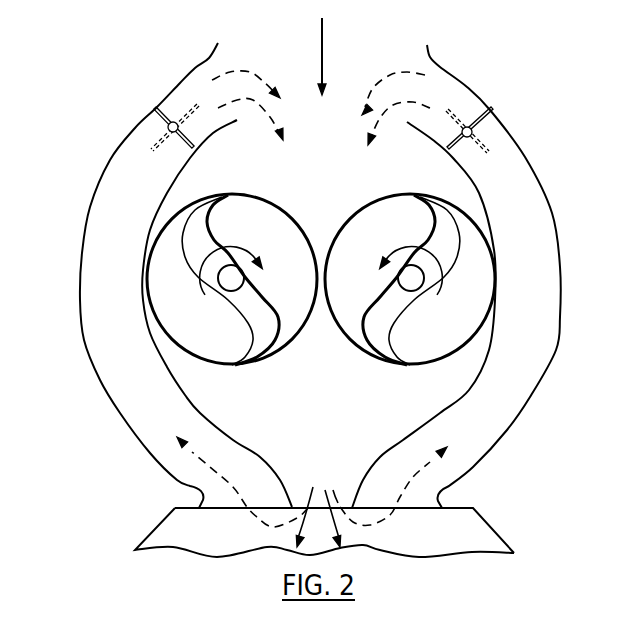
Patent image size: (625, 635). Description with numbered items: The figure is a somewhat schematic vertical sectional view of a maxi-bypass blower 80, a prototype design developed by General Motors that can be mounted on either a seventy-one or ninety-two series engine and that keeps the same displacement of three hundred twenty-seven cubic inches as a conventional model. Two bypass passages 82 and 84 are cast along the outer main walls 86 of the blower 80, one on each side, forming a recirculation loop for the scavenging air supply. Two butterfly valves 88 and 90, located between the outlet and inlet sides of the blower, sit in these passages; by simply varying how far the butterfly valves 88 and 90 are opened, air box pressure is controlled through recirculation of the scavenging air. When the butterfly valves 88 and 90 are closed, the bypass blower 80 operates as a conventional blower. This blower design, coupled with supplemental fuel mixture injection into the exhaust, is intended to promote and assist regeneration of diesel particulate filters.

The maxi-bypass blower 80 is at (73, 304).
The bypass passage 82 is at (103, 237).
The bypass passage 84 is at (532, 227).
The outer main walls 86 is at (95, 193).
The butterfly valve 88 is at (157, 123).
The butterfly valve 90 is at (483, 128).